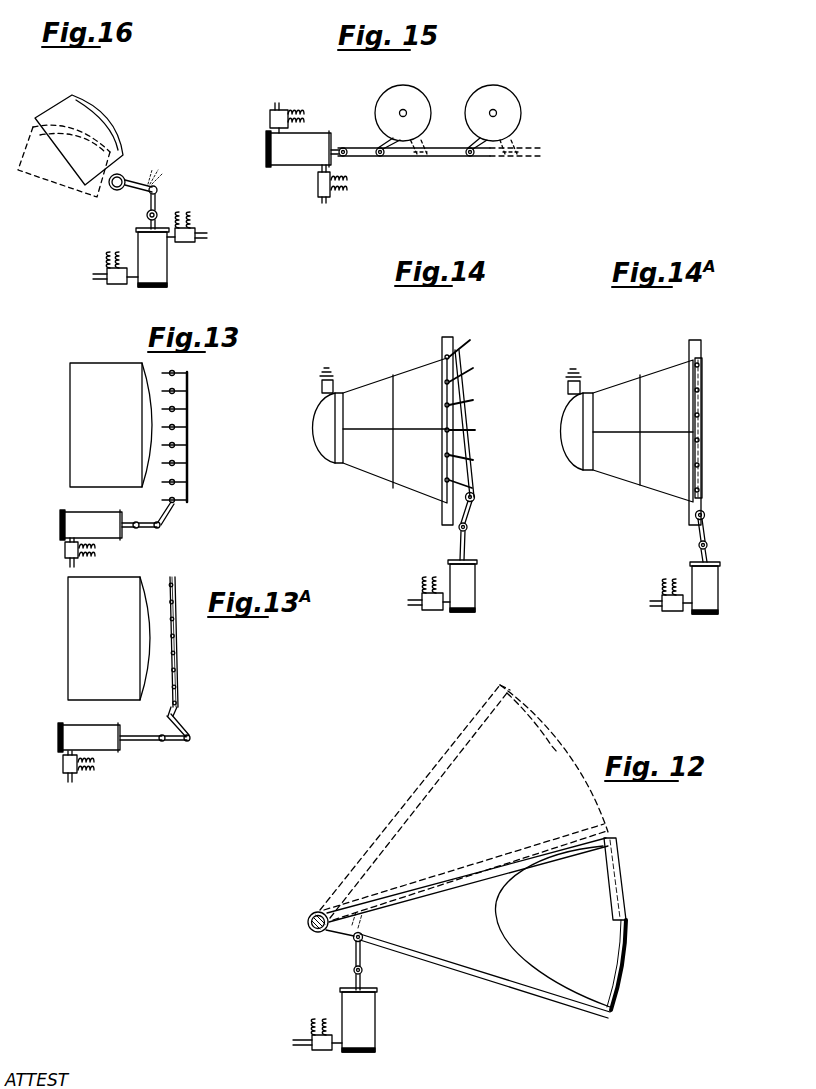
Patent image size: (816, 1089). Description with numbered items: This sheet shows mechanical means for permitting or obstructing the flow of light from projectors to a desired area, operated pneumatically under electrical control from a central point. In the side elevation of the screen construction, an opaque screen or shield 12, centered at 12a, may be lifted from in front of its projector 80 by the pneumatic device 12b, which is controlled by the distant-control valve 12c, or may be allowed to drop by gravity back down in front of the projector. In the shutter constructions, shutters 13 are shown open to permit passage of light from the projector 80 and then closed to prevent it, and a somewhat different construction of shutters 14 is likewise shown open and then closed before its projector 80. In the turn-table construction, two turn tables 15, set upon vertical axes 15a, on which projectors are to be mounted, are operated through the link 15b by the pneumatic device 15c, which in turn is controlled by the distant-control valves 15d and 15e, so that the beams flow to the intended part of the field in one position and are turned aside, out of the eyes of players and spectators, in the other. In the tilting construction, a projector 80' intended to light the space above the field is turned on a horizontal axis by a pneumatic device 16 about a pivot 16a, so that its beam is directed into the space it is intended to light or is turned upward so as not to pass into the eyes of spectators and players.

In FIG. 12, the opaque screen or shield 12 is at (613, 1010).
In FIG. 12, the center of screen 12a is at (308, 926).
In FIG. 12, the pneumatic device 12b is at (365, 1013).
In FIG. 12, the distant-control valve 12c is at (323, 1043).
In FIG. 13, the shutters 13 is at (179, 392).
In FIG. 13A, the shutters 13 is at (173, 675).
In FIG. 14, the shutters 14 is at (470, 430).
In FIG. 14A, the shutters 14 is at (700, 490).
In FIG. 15, the turn table 15 is at (422, 104).
In FIG. 15, the vertical axis 15a is at (401, 114).
In FIG. 15, the link 15b is at (403, 157).
In FIG. 15, the pneumatic device 15c is at (292, 157).
In FIG. 15, the distant-control valve 15d is at (283, 110).
In FIG. 15, the distant-control valve 15e is at (318, 192).
In FIG. 16, the fluid cylinder 16 is at (158, 262).
In FIG. 16, the pivot for tilting cup 16a is at (119, 180).
In FIG. 13, the projector 80 is at (90, 425).
In FIG. 13A, the projector 80 is at (87, 638).
In FIG. 14, the projector 80 is at (380, 438).
In FIG. 14A, the projector 80 is at (627, 440).
In FIG. 12, the projector 80 is at (532, 926).
In FIG. 16, the projector 80' is at (70, 156).